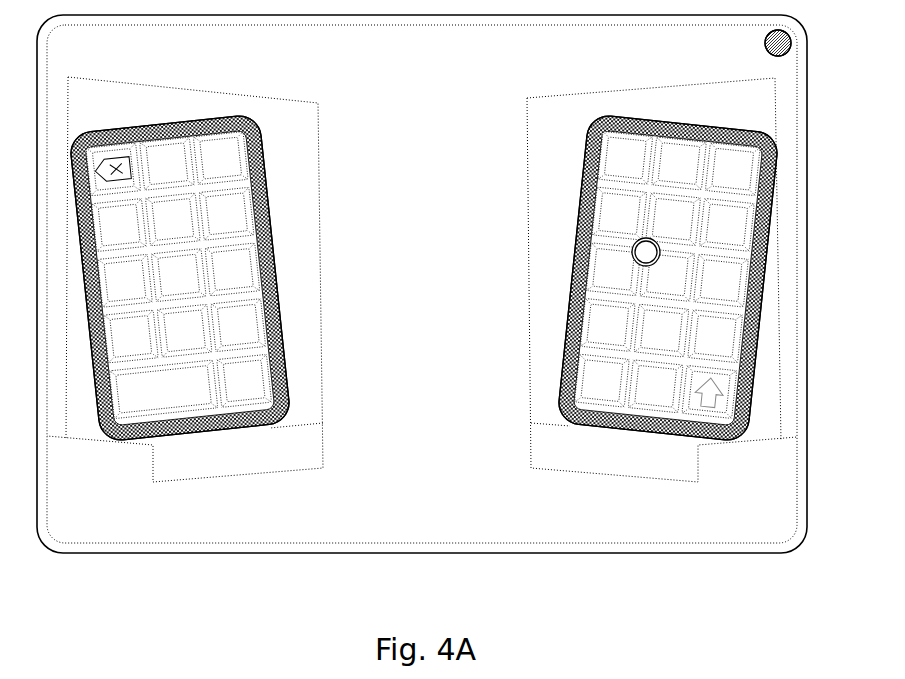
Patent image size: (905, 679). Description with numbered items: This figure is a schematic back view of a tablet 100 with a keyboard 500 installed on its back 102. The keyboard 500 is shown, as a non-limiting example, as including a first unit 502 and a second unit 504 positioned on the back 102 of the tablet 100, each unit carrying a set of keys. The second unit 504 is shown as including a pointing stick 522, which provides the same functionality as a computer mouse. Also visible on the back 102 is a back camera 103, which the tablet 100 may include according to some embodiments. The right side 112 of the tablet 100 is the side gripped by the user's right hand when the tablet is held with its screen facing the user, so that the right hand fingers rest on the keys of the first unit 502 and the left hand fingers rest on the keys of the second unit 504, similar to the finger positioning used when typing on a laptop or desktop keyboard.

The tablet 100 is at (293, 678).
The back 102 is at (184, 519).
The back camera 103 is at (757, 44).
The right side 112 is at (763, 667).
The keyboard 500 is at (543, 364).
The first unit 502 is at (281, 167).
The second unit 504 is at (647, 446).
The pointing stick 522 is at (629, 247).